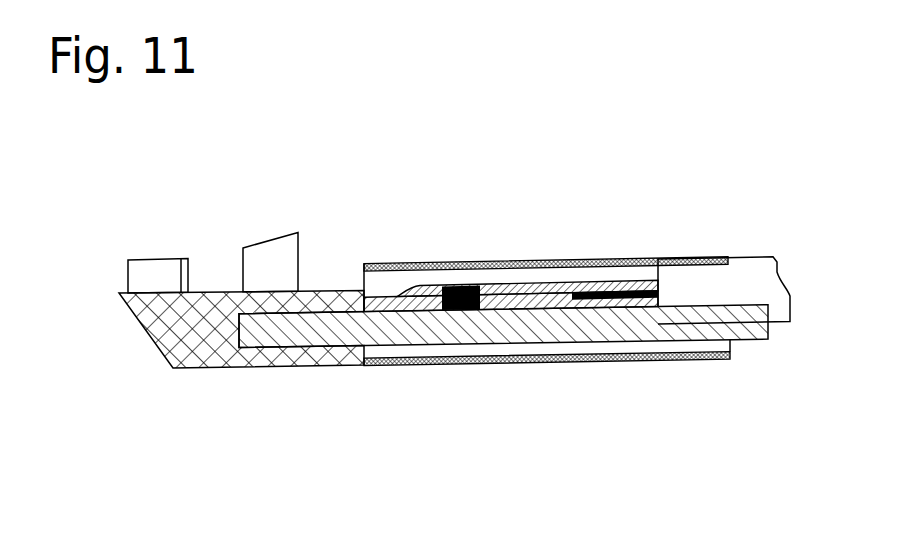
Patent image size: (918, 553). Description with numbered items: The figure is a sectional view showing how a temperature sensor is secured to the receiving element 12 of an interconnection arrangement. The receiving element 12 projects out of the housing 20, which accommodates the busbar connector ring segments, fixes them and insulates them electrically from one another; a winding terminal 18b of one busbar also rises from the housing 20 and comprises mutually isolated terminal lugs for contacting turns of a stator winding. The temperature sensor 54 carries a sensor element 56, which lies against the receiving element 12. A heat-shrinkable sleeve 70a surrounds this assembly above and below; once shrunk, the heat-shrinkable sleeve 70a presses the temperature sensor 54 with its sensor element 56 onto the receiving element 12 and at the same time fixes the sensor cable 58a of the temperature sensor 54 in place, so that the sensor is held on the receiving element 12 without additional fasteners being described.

The receiving element 12 is at (428, 328).
The winding terminal 18b is at (267, 263).
The housing 20 is at (233, 357).
The temperature sensor 54 is at (580, 305).
The sensor element 56 is at (445, 298).
The sensor cable 58a is at (732, 287).
The heat-shrinkable sleeve 70a is at (575, 260).